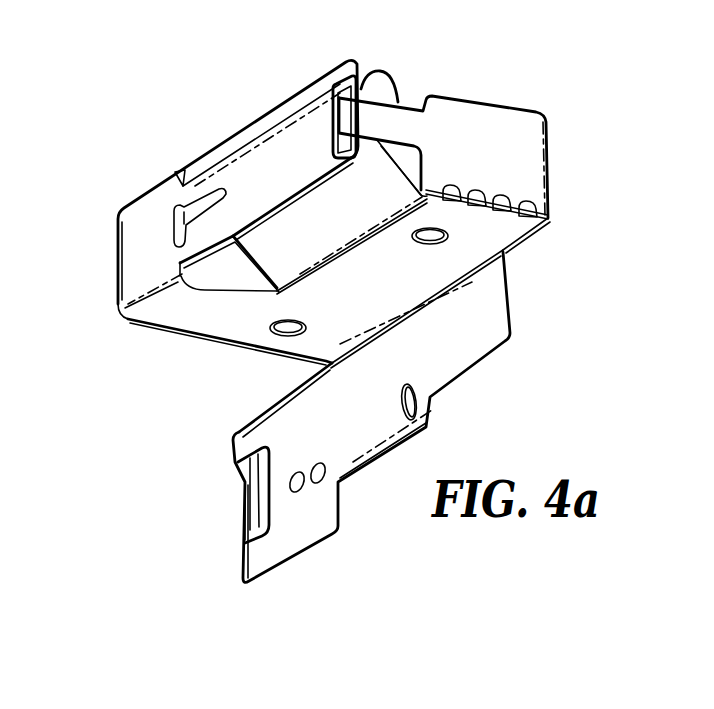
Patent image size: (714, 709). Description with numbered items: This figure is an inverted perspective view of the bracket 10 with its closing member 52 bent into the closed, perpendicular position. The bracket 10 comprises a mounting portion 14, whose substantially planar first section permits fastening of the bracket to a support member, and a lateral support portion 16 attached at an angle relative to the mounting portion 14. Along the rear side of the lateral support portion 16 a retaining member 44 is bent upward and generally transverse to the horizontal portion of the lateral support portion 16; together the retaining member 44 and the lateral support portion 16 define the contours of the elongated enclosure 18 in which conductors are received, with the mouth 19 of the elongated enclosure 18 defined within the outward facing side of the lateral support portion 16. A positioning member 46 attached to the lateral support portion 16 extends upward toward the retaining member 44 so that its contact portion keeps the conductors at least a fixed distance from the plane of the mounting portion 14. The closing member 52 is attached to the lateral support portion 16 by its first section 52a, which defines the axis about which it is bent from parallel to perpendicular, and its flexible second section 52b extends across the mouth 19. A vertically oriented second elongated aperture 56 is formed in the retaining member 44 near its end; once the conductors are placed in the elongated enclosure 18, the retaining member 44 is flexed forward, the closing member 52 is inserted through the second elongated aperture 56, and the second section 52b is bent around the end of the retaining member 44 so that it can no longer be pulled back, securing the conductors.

The bracket 10 is at (334, 291).
The mounting portion 14 is at (453, 325).
The lateral support portion 16 is at (487, 230).
The elongated enclosure 18 is at (217, 272).
The mouth 19 is at (413, 157).
The retaining member 44 is at (215, 227).
The positioning member 46 is at (277, 253).
The closing member 52 is at (483, 126).
The first section 52a is at (522, 155).
The second section 52b is at (388, 84).
The second elongated aperture 56 is at (333, 140).